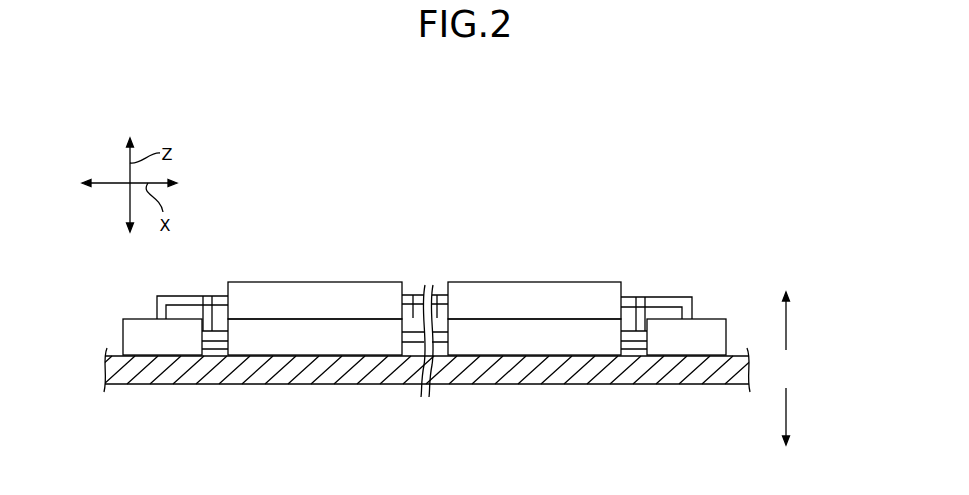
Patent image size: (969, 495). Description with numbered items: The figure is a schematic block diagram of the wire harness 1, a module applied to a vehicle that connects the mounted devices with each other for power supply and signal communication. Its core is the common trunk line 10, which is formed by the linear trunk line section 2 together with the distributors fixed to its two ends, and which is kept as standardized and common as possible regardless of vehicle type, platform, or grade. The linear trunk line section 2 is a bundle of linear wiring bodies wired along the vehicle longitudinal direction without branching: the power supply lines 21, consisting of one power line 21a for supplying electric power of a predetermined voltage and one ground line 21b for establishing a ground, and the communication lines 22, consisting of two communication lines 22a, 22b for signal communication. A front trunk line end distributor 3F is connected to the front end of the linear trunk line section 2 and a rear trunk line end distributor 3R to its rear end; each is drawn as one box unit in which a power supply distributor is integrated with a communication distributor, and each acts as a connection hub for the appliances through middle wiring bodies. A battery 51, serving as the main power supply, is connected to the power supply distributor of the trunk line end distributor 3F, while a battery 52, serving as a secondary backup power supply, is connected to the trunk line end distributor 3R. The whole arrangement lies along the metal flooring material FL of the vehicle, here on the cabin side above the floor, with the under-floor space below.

The wire harness 1 is at (200, 118).
The common trunk line 10 is at (607, 157).
The linear trunk line section 2 is at (490, 192).
The power supply line 21 is at (515, 226).
The power line 21a is at (438, 290).
The ground line 21b is at (444, 293).
The communication line 22 is at (422, 226).
The communication line 22a is at (410, 295).
The communication line 22b is at (418, 295).
The trunk line end distributor 3F is at (220, 192).
The trunk line end distributor 3R is at (630, 192).
The battery 51 is at (133, 318).
The battery 52 is at (708, 318).
The flooring material FL is at (155, 394).